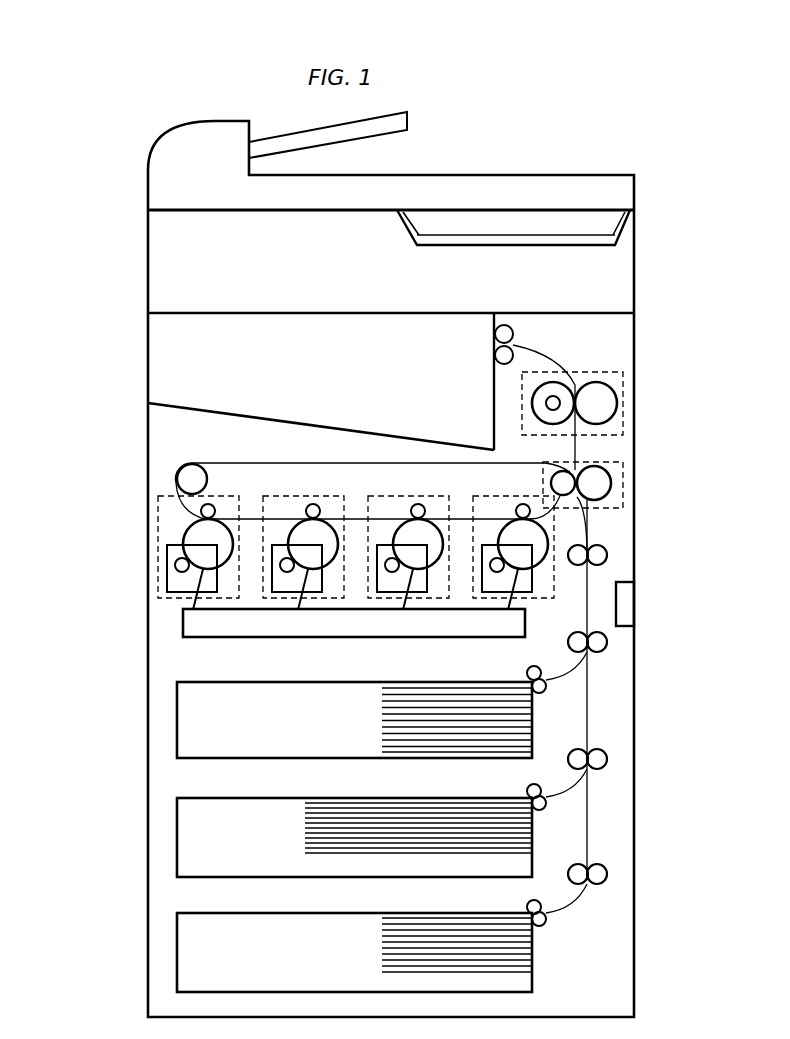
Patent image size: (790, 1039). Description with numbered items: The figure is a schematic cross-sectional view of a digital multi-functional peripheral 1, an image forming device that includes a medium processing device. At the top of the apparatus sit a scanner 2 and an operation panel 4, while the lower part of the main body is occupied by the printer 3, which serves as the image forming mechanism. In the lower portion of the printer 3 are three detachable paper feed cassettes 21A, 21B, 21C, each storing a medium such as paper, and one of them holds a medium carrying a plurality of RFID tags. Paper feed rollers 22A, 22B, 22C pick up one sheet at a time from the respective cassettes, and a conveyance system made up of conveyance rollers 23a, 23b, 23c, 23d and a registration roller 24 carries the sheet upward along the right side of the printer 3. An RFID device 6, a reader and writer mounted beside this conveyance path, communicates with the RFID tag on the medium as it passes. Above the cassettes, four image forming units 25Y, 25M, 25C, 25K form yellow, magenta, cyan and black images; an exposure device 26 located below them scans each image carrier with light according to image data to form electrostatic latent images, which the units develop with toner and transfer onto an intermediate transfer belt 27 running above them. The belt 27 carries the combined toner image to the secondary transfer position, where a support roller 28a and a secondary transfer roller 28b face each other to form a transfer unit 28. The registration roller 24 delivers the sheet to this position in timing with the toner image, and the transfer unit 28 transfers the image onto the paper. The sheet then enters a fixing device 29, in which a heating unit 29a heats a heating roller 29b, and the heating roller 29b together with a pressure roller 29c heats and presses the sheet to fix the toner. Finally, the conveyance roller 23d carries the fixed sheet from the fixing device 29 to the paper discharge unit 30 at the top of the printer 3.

The digital multi-functional peripheral 1 is at (78, 313).
The scanner 2 is at (640, 285).
The printer 3 is at (640, 345).
The operation panel 4 is at (566, 228).
The RFID device 6 is at (625, 598).
The paper feed cassette 21A is at (310, 682).
The paper feed cassette 21B is at (310, 798).
The paper feed cassette 21C is at (310, 913).
The paper feed roller 22A is at (528, 670).
The paper feed roller 22B is at (528, 788).
The paper feed roller 22C is at (528, 904).
The conveyance roller 23a is at (608, 640).
The conveyance roller 23b is at (608, 757).
The conveyance roller 23c is at (608, 872).
The conveyance roller 23d is at (514, 336).
The registration roller 24 is at (608, 555).
The image forming unit 25Y is at (222, 490).
The image forming unit 25M is at (305, 490).
The image forming unit 25C is at (380, 495).
The image forming unit 25K is at (530, 498).
The exposure device 26 is at (183, 622).
The intermediate transfer belt 27 is at (220, 463).
The transfer unit 28 is at (603, 476).
The support roller 28a is at (551, 478).
The secondary transfer roller 28b is at (606, 490).
The fixing device 29 is at (571, 400).
The heating unit 29a is at (545, 400).
The heating roller 29b is at (533, 410).
The pressure roller 29c is at (600, 383).
The paper discharge unit 30 is at (362, 428).